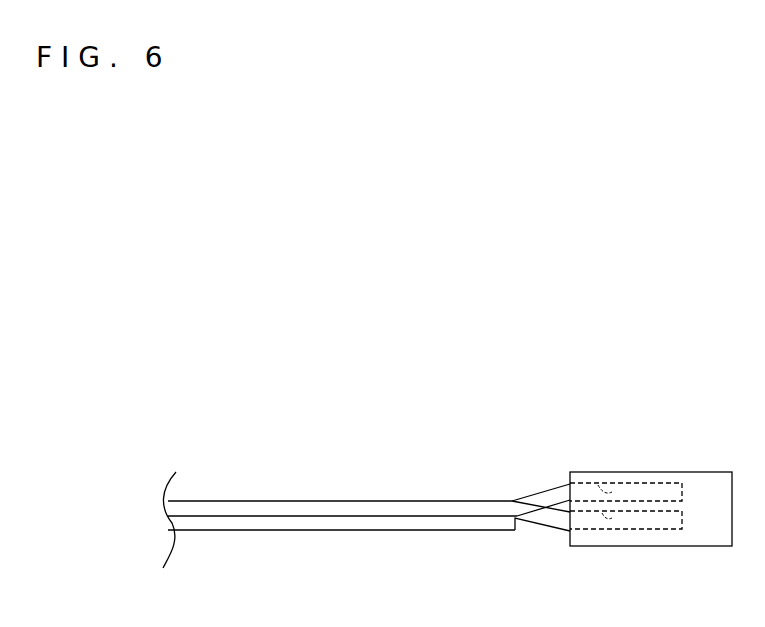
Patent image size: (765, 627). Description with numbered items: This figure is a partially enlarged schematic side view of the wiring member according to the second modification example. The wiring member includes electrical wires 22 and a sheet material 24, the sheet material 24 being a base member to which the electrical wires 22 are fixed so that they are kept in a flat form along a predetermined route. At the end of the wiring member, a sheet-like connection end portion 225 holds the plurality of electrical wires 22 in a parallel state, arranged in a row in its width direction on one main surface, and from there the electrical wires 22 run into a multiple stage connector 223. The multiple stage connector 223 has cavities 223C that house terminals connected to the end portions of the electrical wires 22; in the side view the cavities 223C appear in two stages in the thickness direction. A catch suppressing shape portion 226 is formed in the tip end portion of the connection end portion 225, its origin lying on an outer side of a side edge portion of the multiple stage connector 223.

The electrical wire 22 is at (558, 510).
The sheet material 24 is at (240, 530).
The connection end portion 225 is at (313, 530).
The catch suppressing shape portion 226 is at (508, 532).
The multiple stage connector 223 is at (708, 470).
The cavity 223C is at (611, 518).